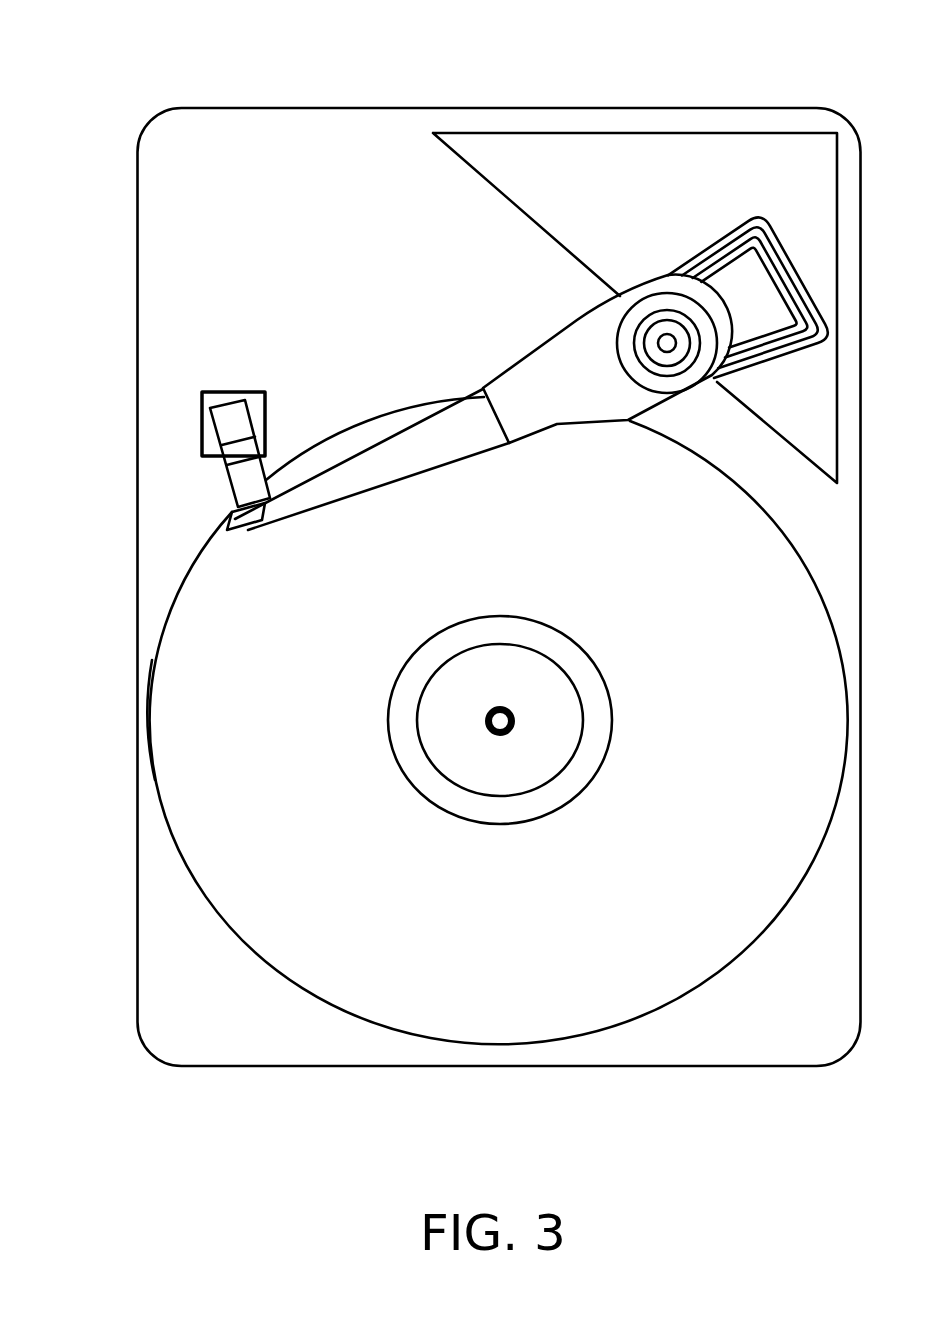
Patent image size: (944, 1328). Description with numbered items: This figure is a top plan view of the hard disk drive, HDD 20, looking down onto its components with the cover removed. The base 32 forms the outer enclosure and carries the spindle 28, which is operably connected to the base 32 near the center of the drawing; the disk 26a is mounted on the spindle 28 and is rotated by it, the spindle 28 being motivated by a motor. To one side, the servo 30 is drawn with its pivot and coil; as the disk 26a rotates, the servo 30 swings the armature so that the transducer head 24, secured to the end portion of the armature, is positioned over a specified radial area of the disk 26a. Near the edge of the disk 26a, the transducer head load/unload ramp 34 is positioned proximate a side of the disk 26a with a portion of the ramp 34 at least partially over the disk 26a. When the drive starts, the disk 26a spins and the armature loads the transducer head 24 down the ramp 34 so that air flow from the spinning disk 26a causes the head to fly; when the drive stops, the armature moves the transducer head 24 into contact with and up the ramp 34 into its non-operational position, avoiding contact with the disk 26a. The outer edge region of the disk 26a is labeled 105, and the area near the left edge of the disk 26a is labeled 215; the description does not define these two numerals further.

The HDD 20 is at (107, 62).
The transducer head 24 is at (258, 526).
The disk 26a is at (727, 963).
The spindle 28 is at (548, 672).
The servo 30 is at (723, 262).
The base 32 is at (689, 1068).
The transducer head load/unload ramp 34 is at (257, 488).
The disk outer edge 105 is at (438, 432).
The disk landing zone 215 is at (173, 714).